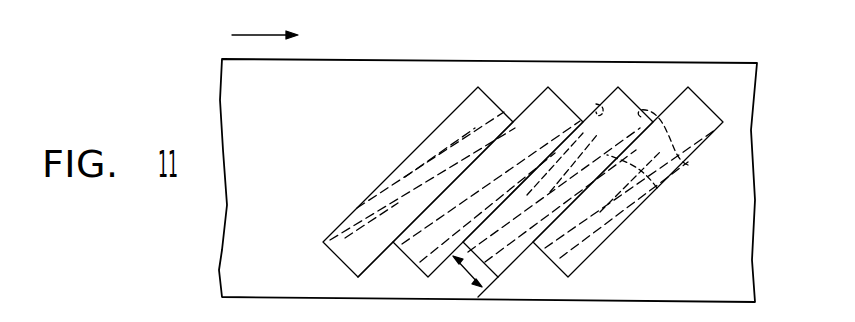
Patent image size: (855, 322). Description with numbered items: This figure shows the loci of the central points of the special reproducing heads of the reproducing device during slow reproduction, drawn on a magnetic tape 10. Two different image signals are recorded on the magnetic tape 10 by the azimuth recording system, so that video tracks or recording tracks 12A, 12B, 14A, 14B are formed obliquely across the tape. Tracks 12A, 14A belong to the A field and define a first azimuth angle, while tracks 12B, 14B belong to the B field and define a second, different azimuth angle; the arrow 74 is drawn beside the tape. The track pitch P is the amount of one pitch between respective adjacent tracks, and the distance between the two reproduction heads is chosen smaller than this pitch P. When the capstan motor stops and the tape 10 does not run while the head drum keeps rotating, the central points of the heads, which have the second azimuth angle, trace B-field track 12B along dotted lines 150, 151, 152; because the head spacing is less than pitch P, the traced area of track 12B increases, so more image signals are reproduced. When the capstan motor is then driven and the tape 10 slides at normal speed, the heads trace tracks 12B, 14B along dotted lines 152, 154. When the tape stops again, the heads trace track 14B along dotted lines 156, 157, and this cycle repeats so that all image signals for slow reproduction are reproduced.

The magnetic tape 10 is at (738, 63).
The direction of movement arrow 74 is at (258, 34).
The recording track 14B is at (478, 87).
The recording track 14A is at (548, 87).
The recording track 12B is at (618, 87).
The recording track 12A is at (688, 87).
The dotted line 152 is at (596, 108).
The dotted line 157 is at (440, 155).
The dotted line 156 is at (383, 212).
The dotted line 151 is at (688, 165).
The dotted line 150 is at (651, 183).
The dotted line 154 is at (386, 250).
The track pitch P is at (475, 276).